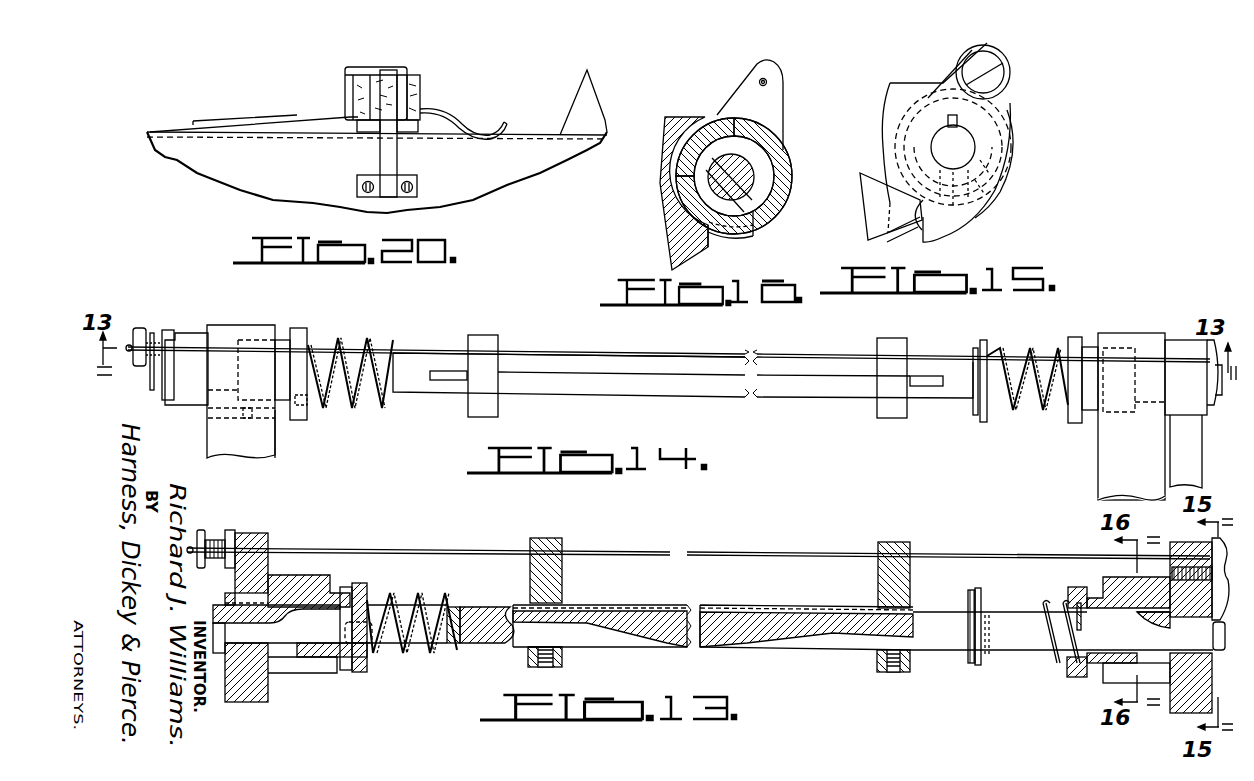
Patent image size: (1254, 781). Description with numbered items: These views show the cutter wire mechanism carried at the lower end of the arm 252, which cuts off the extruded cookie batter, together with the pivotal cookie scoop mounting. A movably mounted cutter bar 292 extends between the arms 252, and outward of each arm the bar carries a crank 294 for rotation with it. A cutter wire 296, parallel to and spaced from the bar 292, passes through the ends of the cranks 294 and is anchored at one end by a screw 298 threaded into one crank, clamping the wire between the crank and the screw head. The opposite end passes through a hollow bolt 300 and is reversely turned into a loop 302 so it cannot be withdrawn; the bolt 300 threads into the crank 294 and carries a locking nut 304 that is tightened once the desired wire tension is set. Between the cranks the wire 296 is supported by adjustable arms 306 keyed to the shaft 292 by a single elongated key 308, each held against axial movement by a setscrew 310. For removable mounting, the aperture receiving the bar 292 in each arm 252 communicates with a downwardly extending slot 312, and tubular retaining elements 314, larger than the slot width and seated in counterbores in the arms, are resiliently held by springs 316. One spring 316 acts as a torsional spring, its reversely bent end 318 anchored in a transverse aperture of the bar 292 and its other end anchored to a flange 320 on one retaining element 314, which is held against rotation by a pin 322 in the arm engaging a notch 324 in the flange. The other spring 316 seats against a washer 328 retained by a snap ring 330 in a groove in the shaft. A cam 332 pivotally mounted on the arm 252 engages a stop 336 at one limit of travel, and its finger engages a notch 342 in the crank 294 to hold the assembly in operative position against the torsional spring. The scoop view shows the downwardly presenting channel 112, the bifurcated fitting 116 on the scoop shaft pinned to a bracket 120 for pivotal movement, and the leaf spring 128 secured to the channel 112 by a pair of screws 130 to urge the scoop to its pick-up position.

In FIG. 20, the channel 112 is at (373, 68).
In FIG. 20, the bifurcated fitting 116 is at (422, 82).
In FIG. 20, the bracket 120 is at (393, 155).
In FIG. 20, the leaf spring 128 is at (457, 110).
In FIG. 20, the screws 130 is at (348, 102).
In FIG. 16, the arm 252 is at (682, 120).
In FIG. 14, the arm 252 is at (248, 325).
In FIG. 13, the arm 252 is at (298, 575).
In FIG. 16, the cutter bar 292 is at (718, 187).
In FIG. 15, the cutter bar 292 is at (962, 152).
In FIG. 13, the cutter bar 292 is at (505, 643).
In FIG. 15, the crank 294 is at (1000, 113).
In FIG. 14, the crank 294 is at (188, 410).
In FIG. 13, the crank 294 is at (255, 702).
In FIG. 16, the cutter wire 296 is at (766, 81).
In FIG. 14, the cutter wire 296 is at (773, 357).
In FIG. 13, the cutter wire 296 is at (785, 552).
In FIG. 15, the screw 298 is at (1008, 78).
In FIG. 13, the screw 298 is at (1216, 540).
In FIG. 14, the hollow bolt 300 is at (140, 328).
In FIG. 13, the hollow bolt 300 is at (200, 530).
In FIG. 13, the loop 302 is at (192, 556).
In FIG. 14, the locking nut 304 is at (170, 330).
In FIG. 13, the locking nut 304 is at (230, 530).
In FIG. 16, the adjustable arms 306 is at (775, 88).
In FIG. 14, the adjustable arms 306 is at (497, 344).
In FIG. 13, the adjustable arms 306 is at (562, 540).
In FIG. 14, the elongated key 308 is at (600, 378).
In FIG. 13, the elongated key 308 is at (662, 605).
In FIG. 13, the setscrew 310 is at (548, 670).
In FIG. 16, the slot 312 is at (712, 250).
In FIG. 16, the tubular retaining element 314 is at (695, 180).
In FIG. 14, the tubular retaining element 314 is at (288, 340).
In FIG. 13, the tubular retaining element 314 is at (346, 587).
In FIG. 14, the spring 316 is at (372, 345).
In FIG. 13, the spring 316 is at (410, 660).
In FIG. 13, the reversely bent end 318 is at (456, 607).
In FIG. 14, the flange 320 is at (300, 328).
In FIG. 13, the flange 320 is at (367, 595).
In FIG. 14, the pin 322 is at (283, 425).
In FIG. 14, the notch 324 is at (307, 402).
In FIG. 14, the washer 328 is at (980, 425).
In FIG. 13, the washer 328 is at (980, 590).
In FIG. 14, the snap ring 330 is at (973, 408).
In FIG. 13, the snap ring 330 is at (968, 600).
In FIG. 15, the cam 332 is at (870, 240).
In FIG. 13, the stop 336 is at (1077, 606).
In FIG. 15, the notch 342 is at (918, 232).